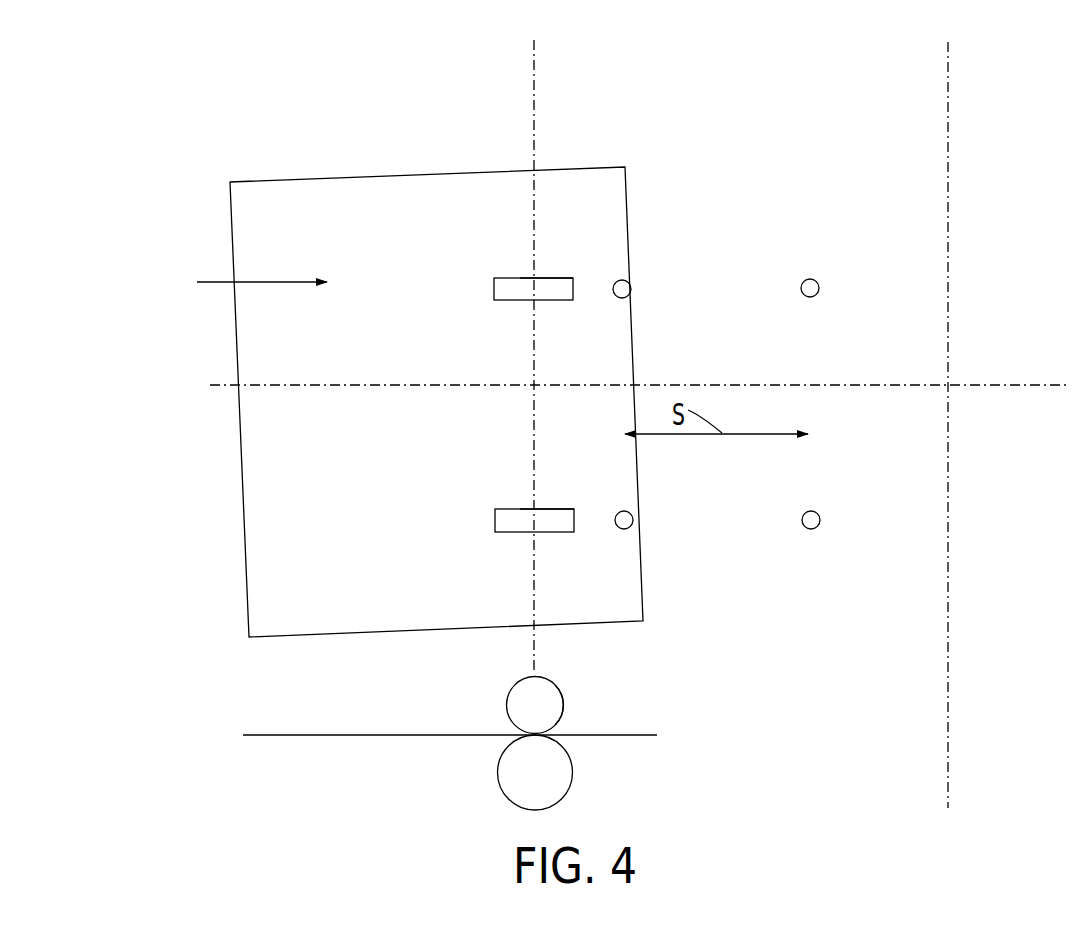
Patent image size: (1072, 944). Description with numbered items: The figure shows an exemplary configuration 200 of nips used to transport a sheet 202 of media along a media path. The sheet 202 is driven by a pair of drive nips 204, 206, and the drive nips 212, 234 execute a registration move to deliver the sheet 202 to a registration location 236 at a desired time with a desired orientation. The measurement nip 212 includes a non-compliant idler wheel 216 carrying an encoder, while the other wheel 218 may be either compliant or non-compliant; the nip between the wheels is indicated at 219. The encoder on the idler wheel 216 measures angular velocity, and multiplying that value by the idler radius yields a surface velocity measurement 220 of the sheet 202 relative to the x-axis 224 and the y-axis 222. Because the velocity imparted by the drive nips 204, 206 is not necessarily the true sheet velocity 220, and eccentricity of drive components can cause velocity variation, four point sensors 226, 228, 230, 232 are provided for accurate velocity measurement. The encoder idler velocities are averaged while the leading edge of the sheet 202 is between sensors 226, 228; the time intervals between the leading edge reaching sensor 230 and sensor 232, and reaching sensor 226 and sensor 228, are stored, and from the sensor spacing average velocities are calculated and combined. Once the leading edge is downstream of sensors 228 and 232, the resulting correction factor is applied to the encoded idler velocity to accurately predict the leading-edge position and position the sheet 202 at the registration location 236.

The exemplary configuration of nips 200 is at (186, 139).
The sheet of media 202 is at (380, 167).
The drive nip 204 is at (503, 290).
The drive nip 206 is at (505, 523).
The measurement nip 212 is at (547, 509).
The non-compliant idler wheel 216 is at (523, 705).
The other wheel 218 is at (523, 760).
The roller nip 219 is at (566, 705).
The surface velocity measurement 220 is at (222, 283).
The y-axis 222 is at (541, 78).
The x-axis 224 is at (985, 386).
The point sensor 226 is at (633, 522).
The point sensor 228 is at (820, 523).
The point sensor 230 is at (631, 291).
The point sensor 232 is at (819, 292).
The drive nip 234 is at (545, 278).
The registration location 236 is at (953, 672).